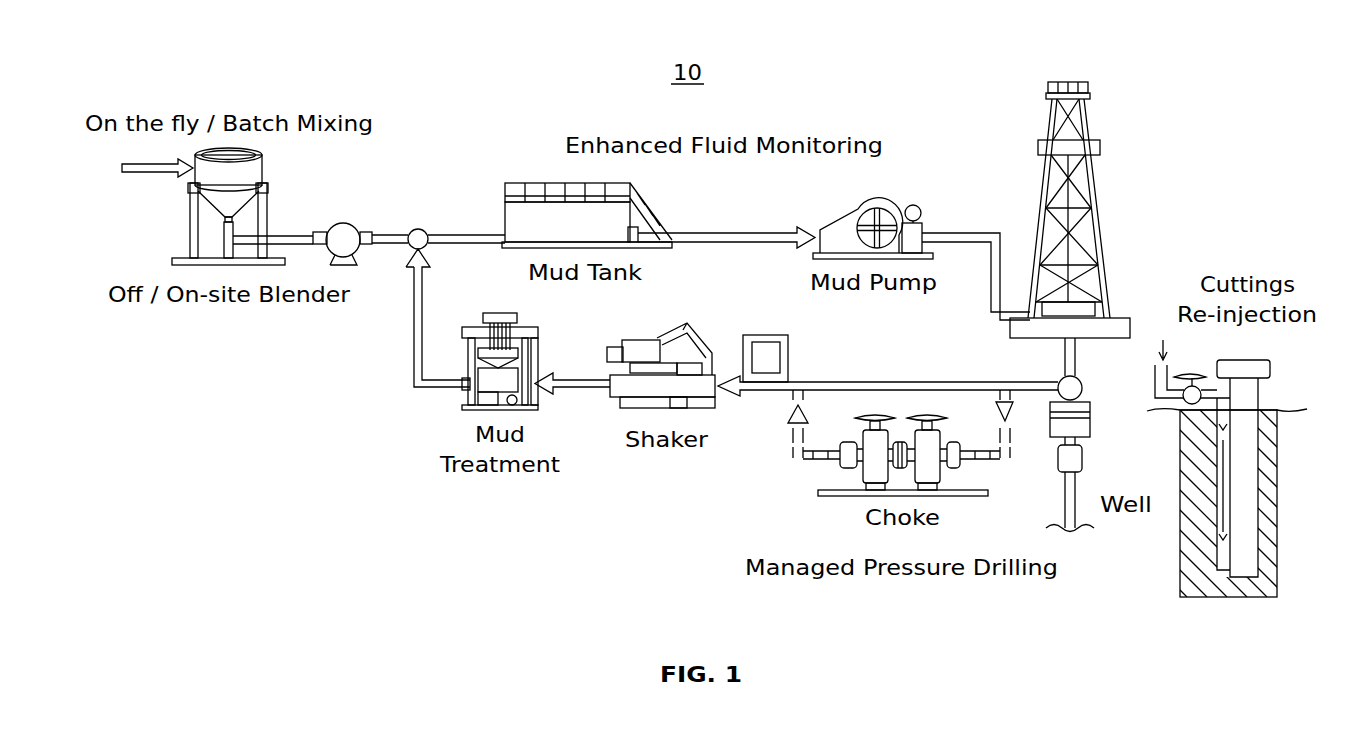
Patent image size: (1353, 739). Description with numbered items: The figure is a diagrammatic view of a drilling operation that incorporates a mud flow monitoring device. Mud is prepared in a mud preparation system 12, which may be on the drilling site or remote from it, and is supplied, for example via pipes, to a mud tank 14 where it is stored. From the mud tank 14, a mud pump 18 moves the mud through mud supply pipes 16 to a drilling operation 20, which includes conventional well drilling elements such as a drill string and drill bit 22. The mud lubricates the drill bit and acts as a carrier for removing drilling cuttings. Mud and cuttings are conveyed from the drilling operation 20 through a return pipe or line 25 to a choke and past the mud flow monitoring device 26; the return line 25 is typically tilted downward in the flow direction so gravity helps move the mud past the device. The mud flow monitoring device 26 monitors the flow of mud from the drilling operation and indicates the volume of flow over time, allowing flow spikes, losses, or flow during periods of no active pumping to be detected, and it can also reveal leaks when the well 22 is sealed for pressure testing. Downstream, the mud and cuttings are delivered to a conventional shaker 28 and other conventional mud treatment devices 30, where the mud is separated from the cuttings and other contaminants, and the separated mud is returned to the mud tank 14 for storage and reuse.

The mud preparation system 12 is at (262, 173).
The mud tank 14 is at (503, 225).
The mud supply pipes 16 is at (738, 232).
The mud pump 18 is at (877, 207).
The drilling operation 20 is at (1103, 233).
The drill string and drill bit 22 is at (1083, 455).
The return pipe or line 25 is at (897, 382).
The mud flow monitoring device 26 is at (790, 357).
The shaker 28 is at (660, 337).
The mud treatment devices 30 is at (468, 395).